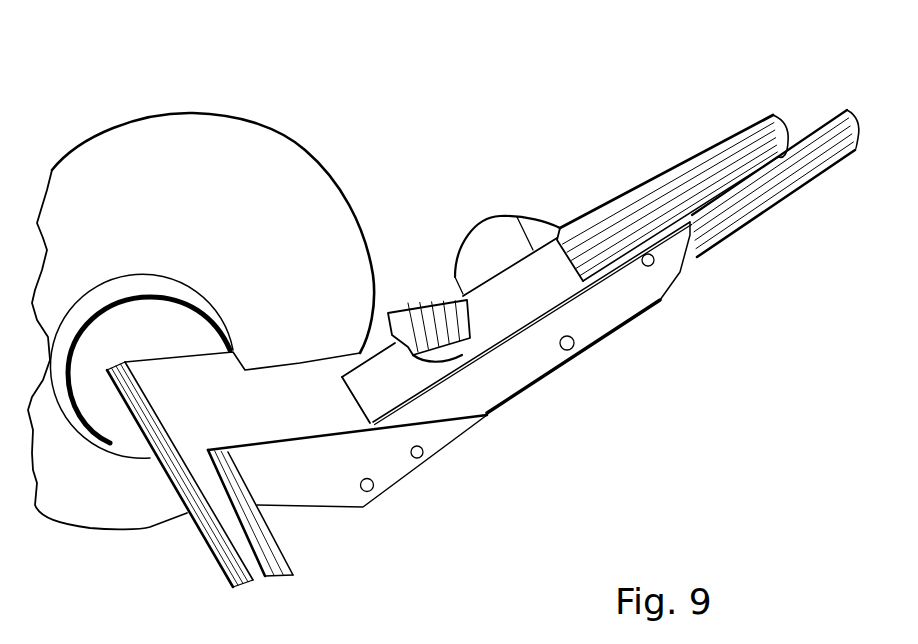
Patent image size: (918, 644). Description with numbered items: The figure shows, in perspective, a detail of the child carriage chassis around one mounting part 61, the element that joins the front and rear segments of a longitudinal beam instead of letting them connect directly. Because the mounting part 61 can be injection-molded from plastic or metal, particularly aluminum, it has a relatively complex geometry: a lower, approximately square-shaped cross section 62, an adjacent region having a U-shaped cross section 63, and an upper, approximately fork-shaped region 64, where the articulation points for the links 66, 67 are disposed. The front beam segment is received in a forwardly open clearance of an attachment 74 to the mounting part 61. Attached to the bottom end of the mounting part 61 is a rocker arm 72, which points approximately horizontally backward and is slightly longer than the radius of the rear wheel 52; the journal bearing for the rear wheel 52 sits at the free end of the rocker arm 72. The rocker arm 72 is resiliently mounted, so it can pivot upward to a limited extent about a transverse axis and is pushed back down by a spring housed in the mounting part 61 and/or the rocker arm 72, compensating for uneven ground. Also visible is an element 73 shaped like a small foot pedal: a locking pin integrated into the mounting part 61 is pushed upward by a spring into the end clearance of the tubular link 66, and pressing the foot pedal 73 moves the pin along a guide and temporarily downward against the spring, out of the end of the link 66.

The rear wheel 52 is at (297, 173).
The mounting part 61 is at (552, 148).
The lower approximately square-shaped cross section 62 is at (492, 392).
The region having a U-shaped cross section 63 is at (557, 360).
The upper approximately fork-shaped region 64 is at (662, 272).
The link 66 is at (733, 160).
The link 67 is at (818, 152).
The rocker arm 72 is at (317, 497).
The foot pedal 73 is at (440, 297).
The attachment 74 is at (487, 227).